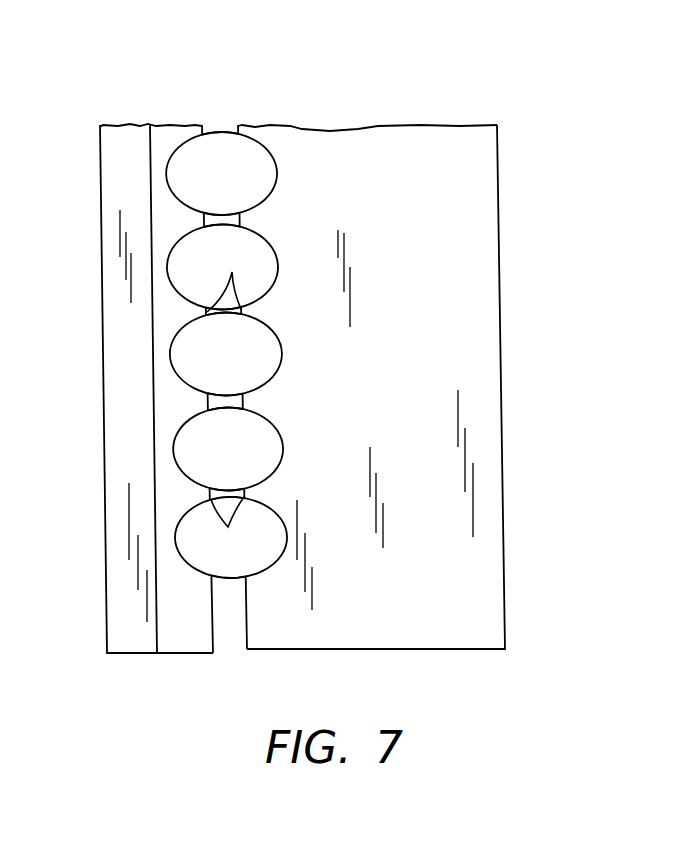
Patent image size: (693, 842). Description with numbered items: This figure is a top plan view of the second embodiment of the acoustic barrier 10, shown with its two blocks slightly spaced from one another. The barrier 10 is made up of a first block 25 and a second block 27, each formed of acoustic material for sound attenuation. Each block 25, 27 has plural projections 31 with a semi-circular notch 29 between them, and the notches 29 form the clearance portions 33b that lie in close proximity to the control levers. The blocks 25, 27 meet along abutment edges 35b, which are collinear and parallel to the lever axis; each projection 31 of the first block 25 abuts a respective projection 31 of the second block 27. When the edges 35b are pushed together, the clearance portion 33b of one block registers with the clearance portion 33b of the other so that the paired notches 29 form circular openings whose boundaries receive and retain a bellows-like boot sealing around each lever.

The barrier 10 is at (522, 360).
The first block 25 is at (117, 363).
The second block 27 is at (482, 258).
The notch 29 is at (177, 178).
The projection 31 is at (202, 128).
The clearance portion 33b is at (270, 530).
The abutment edge 35b is at (233, 400).